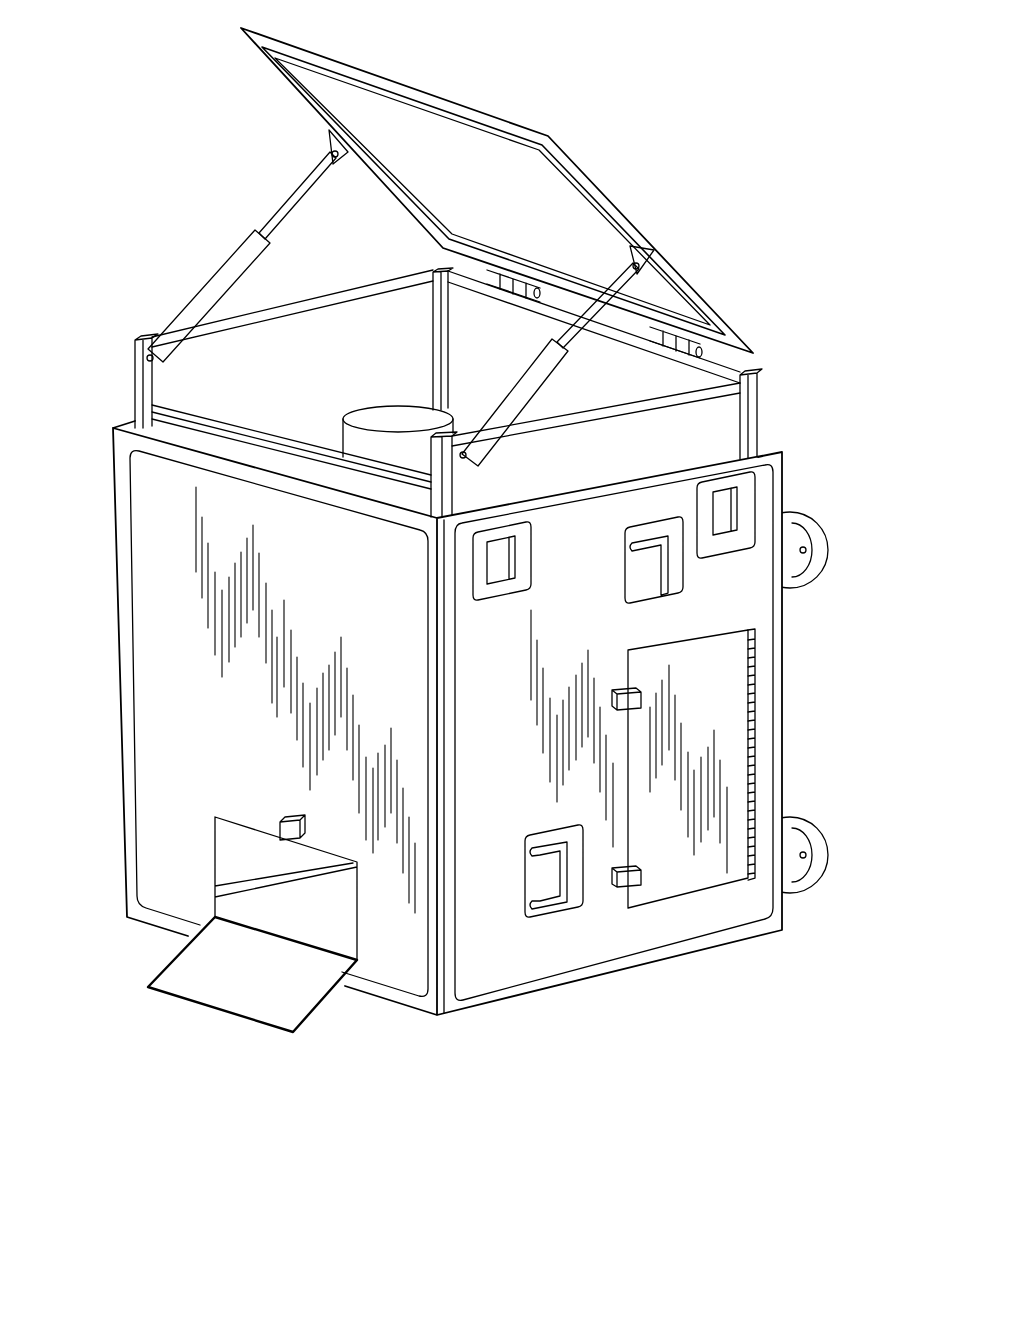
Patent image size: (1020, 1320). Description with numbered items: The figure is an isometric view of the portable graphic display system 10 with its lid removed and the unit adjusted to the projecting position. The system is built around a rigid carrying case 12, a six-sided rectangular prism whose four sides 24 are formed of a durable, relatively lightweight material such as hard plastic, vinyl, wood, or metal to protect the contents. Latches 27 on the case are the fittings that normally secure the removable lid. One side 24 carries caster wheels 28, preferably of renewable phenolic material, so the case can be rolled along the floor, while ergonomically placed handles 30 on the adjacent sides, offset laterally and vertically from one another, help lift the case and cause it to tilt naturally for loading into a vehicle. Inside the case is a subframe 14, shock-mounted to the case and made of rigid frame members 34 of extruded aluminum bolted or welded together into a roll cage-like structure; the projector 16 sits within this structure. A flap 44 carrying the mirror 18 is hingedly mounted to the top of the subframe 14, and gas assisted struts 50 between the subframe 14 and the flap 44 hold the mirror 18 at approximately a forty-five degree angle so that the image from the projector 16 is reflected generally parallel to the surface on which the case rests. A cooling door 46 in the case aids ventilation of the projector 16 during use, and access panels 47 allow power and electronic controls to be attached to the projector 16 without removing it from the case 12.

The portable graphic display system 10 is at (686, 995).
The carrying case 12 is at (98, 575).
The subframe 14 is at (752, 415).
The projector 16 is at (393, 407).
The mirror 18 is at (566, 197).
The sides 24 is at (160, 673).
The latches 27 is at (503, 582).
The caster wheels 28 is at (815, 525).
The handles 30 is at (667, 557).
The frame members 34 is at (140, 377).
The flap 44 is at (477, 117).
The cooling door 46 is at (733, 737).
The access panels 47 is at (172, 972).
The gas assisted struts 50 is at (228, 268).